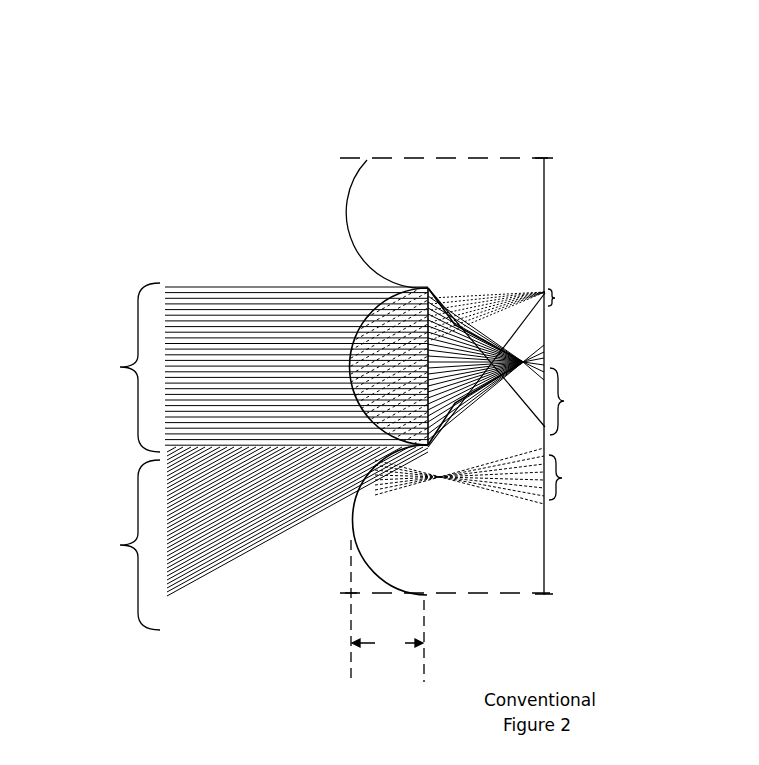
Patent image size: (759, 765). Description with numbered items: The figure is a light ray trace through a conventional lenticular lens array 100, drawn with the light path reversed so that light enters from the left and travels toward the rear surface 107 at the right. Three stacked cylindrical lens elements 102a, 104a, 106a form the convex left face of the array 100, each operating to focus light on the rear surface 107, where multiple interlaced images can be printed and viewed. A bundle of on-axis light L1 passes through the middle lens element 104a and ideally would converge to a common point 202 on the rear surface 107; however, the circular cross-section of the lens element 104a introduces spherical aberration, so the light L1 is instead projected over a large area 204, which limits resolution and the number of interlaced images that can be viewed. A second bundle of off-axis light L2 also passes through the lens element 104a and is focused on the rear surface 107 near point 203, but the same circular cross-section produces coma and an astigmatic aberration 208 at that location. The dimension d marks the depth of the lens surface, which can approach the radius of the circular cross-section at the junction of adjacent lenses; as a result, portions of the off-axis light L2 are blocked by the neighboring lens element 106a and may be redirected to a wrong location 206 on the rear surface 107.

The lenticular lens array 100 is at (290, 31).
The cylindrical lens element 102a is at (350, 184).
The cylindrical lens element 104a is at (368, 318).
The cylindrical lens element 106a is at (353, 555).
The rear surface 107 is at (543, 203).
The common point 202 is at (547, 363).
The point 203 is at (545, 289).
The large area 204 is at (564, 401).
The wrong location 206 is at (562, 480).
The astigmatic aberration 208 is at (555, 298).
The on-axis light L1 is at (120, 367).
The off-axis light L2 is at (120, 545).
The depth of the lens surface d is at (384, 611).